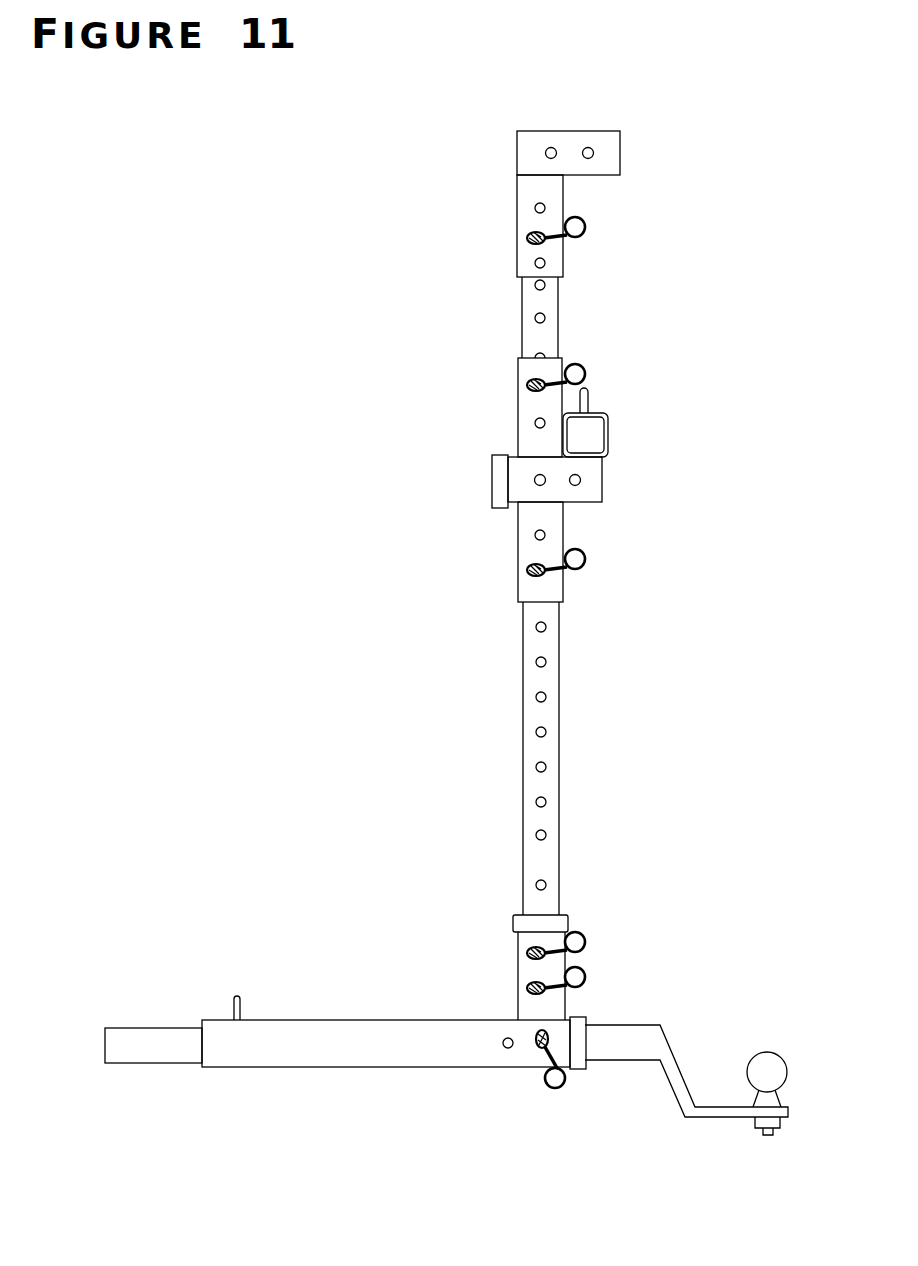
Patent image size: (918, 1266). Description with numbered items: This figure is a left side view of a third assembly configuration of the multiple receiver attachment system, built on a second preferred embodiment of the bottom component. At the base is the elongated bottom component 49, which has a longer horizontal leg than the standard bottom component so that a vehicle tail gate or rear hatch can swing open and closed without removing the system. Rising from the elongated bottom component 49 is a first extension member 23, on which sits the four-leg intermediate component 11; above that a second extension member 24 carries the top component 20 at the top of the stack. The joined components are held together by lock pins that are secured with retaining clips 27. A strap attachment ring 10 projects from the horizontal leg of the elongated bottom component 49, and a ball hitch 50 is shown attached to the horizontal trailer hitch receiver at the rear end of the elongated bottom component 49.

The strap attachment ring 10 is at (240, 1005).
The four-leg intermediate component 11 is at (515, 485).
The top component 20 is at (525, 170).
The first extension member 23 is at (532, 715).
The second extension member 24 is at (525, 308).
The retaining clip for lock pin 27 is at (585, 229).
The elongated bottom component 49 is at (449, 1013).
The ball hitch 50 is at (653, 1047).